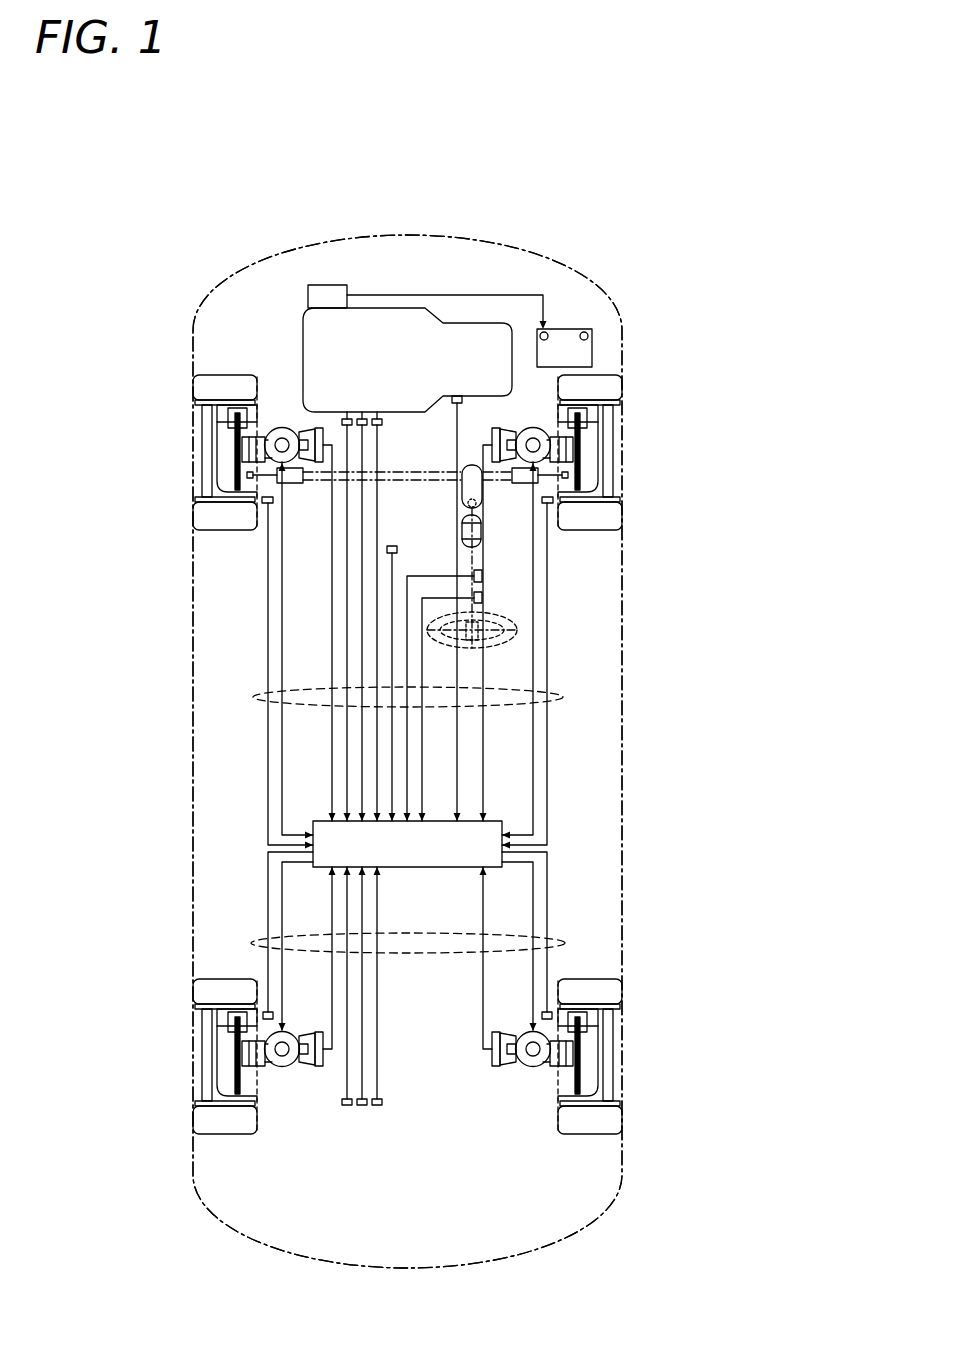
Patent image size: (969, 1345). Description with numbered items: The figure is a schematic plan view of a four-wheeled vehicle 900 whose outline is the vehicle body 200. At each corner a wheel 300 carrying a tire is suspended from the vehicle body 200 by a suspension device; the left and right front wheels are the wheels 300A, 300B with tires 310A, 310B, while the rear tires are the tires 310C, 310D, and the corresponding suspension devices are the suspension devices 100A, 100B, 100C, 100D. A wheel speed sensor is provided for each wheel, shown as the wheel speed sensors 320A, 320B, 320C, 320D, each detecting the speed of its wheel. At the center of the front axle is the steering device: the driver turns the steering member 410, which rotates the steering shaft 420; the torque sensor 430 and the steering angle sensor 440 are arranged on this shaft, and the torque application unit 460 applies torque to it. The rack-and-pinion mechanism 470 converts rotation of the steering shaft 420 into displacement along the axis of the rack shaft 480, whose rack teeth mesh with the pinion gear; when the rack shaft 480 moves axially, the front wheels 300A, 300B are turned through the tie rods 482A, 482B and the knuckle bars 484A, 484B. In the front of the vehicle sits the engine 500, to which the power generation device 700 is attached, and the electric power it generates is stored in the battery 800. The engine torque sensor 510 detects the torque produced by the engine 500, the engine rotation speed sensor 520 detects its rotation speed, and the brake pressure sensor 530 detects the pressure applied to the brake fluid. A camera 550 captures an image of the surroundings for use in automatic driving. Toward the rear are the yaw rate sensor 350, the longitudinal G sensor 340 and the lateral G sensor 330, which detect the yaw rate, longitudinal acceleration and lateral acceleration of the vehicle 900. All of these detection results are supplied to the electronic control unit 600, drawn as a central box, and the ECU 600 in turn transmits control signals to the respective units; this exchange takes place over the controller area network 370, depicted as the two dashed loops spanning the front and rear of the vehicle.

The vehicle 900 is at (597, 186).
The vehicle body 200 is at (608, 300).
The wheel 300A is at (206, 412).
The wheel 300B is at (610, 412).
The wheel 300 is at (206, 1010).
The tire 310A is at (205, 527).
The tire 310B is at (610, 527).
The tire 310C is at (205, 1127).
The tire 310D is at (610, 1127).
The wheel speed sensor 320A is at (262, 501).
The wheel speed sensor 320B is at (553, 501).
The wheel speed sensor 320C is at (262, 1013).
The wheel speed sensor 320D is at (553, 1013).
The suspension device 100A is at (256, 434).
The suspension device 100B is at (559, 434).
The suspension device 100C is at (262, 1080).
The suspension device 100D is at (553, 1080).
The knuckle bar 484A is at (240, 457).
The knuckle bar 484B is at (575, 457).
The tie rod 482A is at (250, 486).
The tie rod 482B is at (565, 486).
The rack shaft 480 is at (398, 470).
The rack-and-pinion mechanism 470 is at (461, 490).
The torque application unit 460 is at (481, 530).
The steering angle sensor 440 is at (482, 577).
The torque sensor 430 is at (482, 598).
The steering shaft 420 is at (481, 605).
The steering member 410 is at (513, 633).
The controller area network (CAN) 370 is at (566, 940).
The engine 500 is at (300, 352).
The power generation device 700 is at (339, 285).
The battery 800 is at (590, 353).
The engine torque sensor 510 is at (351, 418).
The engine rotation speed sensor 520 is at (365, 418).
The brake pressure sensor 530 is at (379, 418).
The camera 550 is at (397, 549).
The electronic control unit (ECU) 600 is at (400, 868).
The yaw rate sensor 350 is at (352, 1106).
The longitudinal G sensor 340 is at (364, 1106).
The lateral G sensor 330 is at (378, 1106).